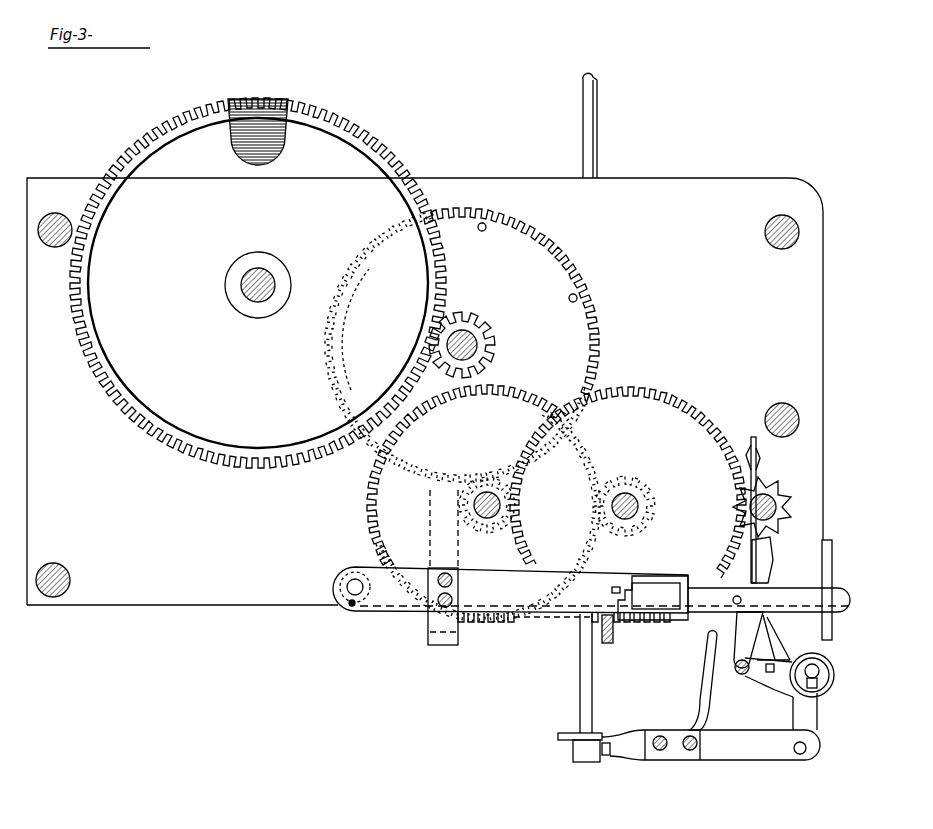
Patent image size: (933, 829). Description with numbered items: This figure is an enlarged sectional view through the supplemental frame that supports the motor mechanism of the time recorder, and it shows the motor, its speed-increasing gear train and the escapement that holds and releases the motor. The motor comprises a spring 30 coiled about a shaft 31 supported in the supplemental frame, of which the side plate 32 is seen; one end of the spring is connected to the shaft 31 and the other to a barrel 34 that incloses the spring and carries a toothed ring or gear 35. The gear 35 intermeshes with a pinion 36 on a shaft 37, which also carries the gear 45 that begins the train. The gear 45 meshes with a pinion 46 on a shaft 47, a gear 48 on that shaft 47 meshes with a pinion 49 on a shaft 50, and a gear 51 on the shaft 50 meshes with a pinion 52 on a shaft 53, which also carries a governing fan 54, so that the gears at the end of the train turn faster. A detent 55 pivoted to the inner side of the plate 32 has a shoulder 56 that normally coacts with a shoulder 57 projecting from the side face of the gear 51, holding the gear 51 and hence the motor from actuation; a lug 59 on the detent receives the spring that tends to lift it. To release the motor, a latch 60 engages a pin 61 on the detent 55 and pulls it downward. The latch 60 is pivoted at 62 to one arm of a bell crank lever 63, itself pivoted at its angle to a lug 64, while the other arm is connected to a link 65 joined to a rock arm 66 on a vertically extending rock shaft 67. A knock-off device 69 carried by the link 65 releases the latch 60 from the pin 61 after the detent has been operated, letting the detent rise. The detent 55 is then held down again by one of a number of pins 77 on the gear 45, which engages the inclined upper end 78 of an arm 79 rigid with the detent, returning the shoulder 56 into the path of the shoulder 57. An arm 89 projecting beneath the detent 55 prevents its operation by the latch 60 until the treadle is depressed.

The spring 30 is at (268, 142).
The shaft 31 is at (254, 296).
The side plate 32 is at (823, 312).
The barrel 34 is at (183, 132).
The toothed ring or gear 35 is at (390, 150).
The pinion 36 is at (468, 314).
The shaft 37 is at (478, 338).
The gear 45 is at (585, 327).
The pinion 46 is at (478, 534).
The shaft 47 is at (505, 507).
The gear 48 is at (378, 500).
The pinion 49 is at (648, 491).
The shaft 50 is at (642, 505).
The gear 51 is at (683, 405).
The pinion 52 is at (787, 489).
The shaft 53 is at (787, 507).
The fan 54 is at (760, 454).
The detent 55 is at (395, 598).
The shoulder 56 is at (647, 578).
The shoulder 57 is at (615, 587).
The lug 59 is at (458, 640).
The latch 60 is at (752, 631).
The pin 61 is at (725, 610).
The pivot 62 is at (741, 675).
The bell crank lever 63 is at (806, 703).
The lug 64 is at (823, 648).
The link 65 is at (728, 748).
The rock arm 66 is at (572, 732).
The rock shaft 67 is at (582, 664).
The knock-off device 69 is at (705, 677).
The pins 77 is at (380, 290).
The inclined upper end 78 is at (463, 464).
The arm 79 is at (436, 528).
The arm 89 is at (613, 638).